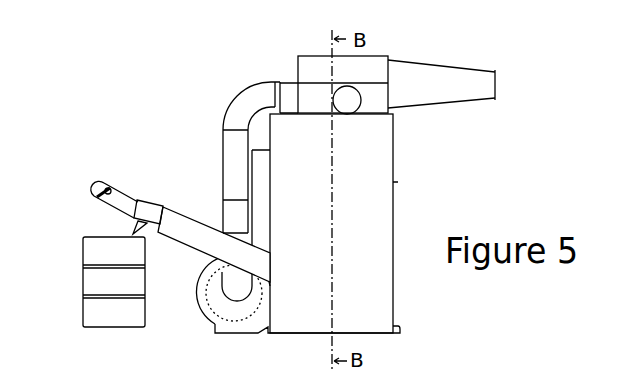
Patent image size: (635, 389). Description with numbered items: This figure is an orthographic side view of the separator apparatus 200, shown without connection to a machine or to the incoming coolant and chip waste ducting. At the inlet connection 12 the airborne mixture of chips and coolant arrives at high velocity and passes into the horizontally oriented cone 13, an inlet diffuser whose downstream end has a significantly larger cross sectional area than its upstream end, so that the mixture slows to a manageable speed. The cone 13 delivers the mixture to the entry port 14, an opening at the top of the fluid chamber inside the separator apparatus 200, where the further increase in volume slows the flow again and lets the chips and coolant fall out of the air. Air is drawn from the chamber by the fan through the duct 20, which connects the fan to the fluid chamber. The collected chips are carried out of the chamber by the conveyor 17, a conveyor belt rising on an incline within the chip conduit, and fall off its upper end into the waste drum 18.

The inlet connection 12 is at (498, 87).
The cone 13 is at (462, 82).
The entry port 14 is at (350, 68).
The conveyor 17 is at (152, 205).
The waste drum 18 is at (110, 258).
The duct 20 is at (243, 113).
The separator apparatus 200 is at (457, 171).